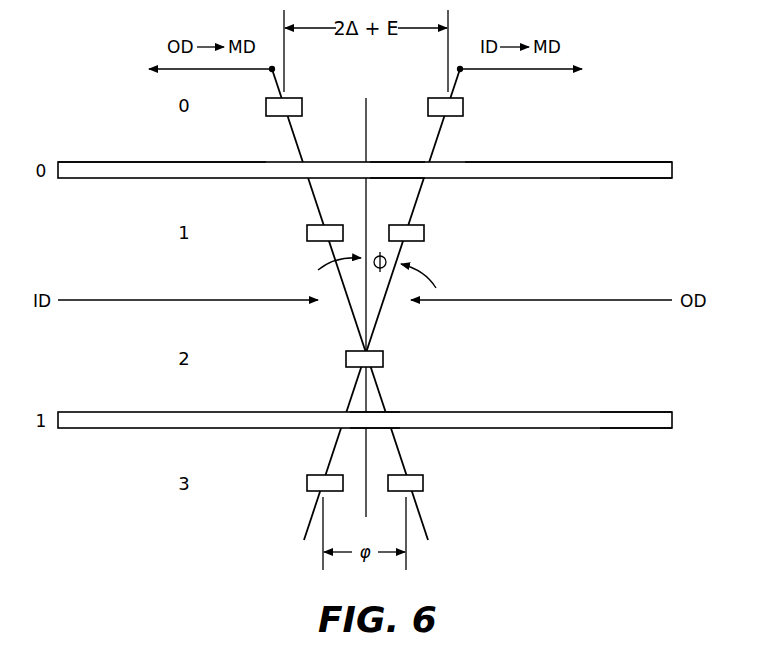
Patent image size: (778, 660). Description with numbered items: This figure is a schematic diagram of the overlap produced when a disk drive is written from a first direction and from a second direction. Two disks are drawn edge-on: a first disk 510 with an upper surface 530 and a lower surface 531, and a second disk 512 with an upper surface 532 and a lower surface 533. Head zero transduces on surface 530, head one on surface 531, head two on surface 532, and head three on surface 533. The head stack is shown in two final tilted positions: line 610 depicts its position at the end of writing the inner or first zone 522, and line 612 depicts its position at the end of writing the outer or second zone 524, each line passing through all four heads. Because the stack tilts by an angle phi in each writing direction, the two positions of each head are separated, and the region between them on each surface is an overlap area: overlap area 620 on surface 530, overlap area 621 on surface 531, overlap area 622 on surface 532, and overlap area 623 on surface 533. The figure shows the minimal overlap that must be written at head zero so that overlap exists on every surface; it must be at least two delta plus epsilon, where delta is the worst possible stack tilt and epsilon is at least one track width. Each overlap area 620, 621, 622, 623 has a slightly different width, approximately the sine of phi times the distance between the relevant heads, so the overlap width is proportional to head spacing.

The first disk 510 is at (673, 170).
The second disk 512 is at (673, 420).
The first zone 522 is at (118, 162).
The second zone 524 is at (552, 162).
The surface of disk 510 530 is at (628, 163).
The surface of disk 510 531 is at (628, 178).
The surface of disk 512 532 is at (628, 413).
The surface of disk 512 533 is at (628, 428).
The line 610 is at (441, 130).
The line 612 is at (291, 130).
The overlap area 620 is at (399, 162).
The overlap area 621 is at (394, 179).
The overlap area 622 is at (372, 412).
The overlap area 623 is at (378, 428).